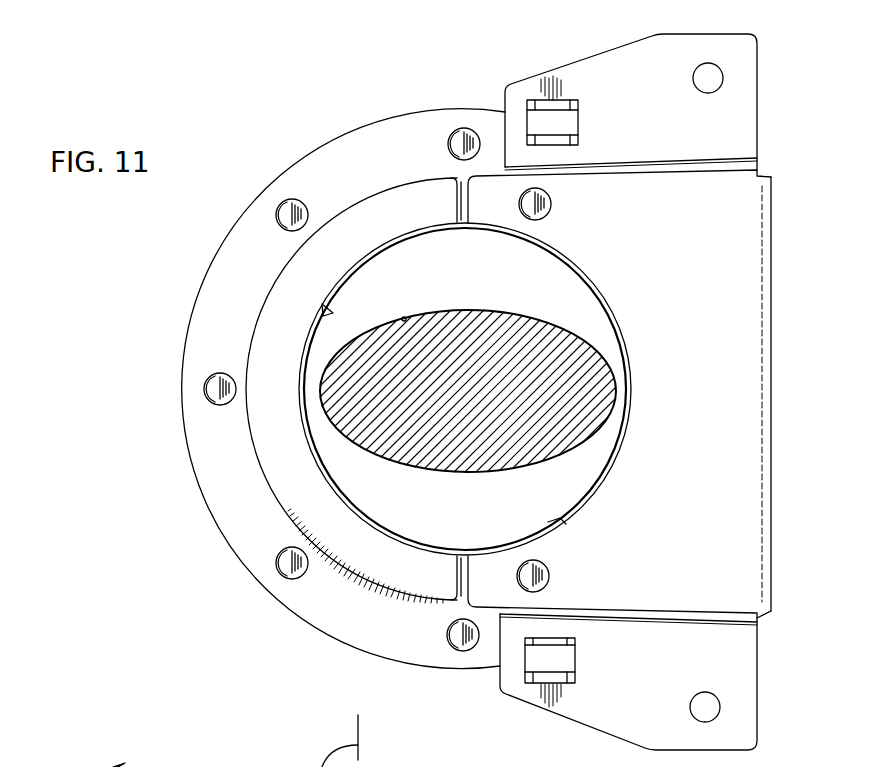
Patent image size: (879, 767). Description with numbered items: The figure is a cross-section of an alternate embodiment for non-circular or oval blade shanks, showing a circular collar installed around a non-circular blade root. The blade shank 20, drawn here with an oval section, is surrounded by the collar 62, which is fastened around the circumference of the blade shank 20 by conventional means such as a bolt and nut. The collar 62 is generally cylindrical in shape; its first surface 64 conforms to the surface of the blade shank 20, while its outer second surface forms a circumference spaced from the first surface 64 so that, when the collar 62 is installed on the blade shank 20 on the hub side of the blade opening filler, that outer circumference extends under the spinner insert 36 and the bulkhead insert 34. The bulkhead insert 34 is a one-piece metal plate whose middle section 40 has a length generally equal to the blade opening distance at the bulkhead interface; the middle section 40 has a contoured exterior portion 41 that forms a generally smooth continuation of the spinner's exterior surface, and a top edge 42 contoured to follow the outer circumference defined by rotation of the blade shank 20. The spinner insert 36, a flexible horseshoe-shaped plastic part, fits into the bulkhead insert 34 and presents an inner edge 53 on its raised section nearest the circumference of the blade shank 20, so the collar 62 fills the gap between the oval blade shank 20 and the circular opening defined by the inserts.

The blade shank 20 is at (472, 458).
The bulkhead insert 34 is at (520, 82).
The spinner insert 36 is at (313, 158).
The middle section 40 is at (771, 410).
The exterior portion 41 is at (698, 392).
The top edge 42 is at (560, 521).
The inner edge 53 is at (325, 309).
The collar 62 is at (476, 282).
The first surface 64 is at (404, 318).